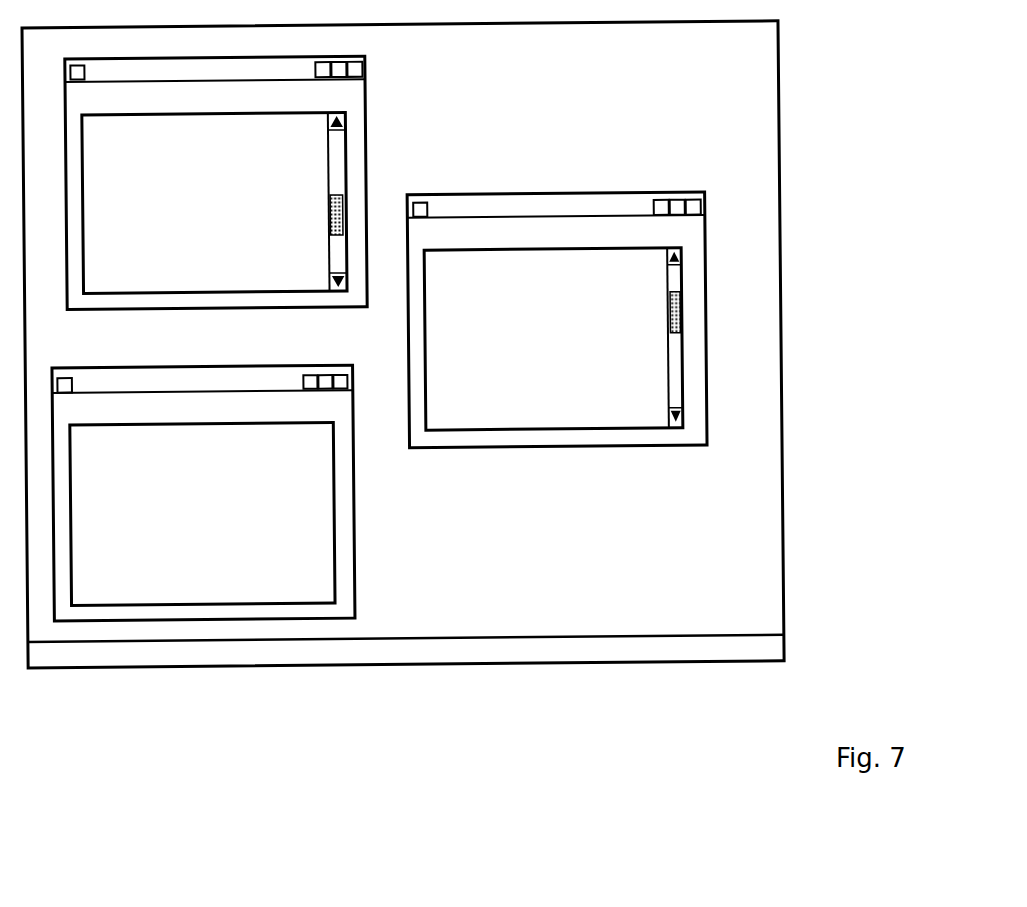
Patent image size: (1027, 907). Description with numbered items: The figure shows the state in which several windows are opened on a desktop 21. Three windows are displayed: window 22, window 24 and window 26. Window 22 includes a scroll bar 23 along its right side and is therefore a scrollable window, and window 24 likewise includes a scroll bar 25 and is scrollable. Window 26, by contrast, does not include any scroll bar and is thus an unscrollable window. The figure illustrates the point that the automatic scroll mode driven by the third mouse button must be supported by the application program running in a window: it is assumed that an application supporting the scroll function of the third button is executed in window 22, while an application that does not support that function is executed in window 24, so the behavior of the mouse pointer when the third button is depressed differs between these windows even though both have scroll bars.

The desktop 21 is at (403, 344).
The window 22 is at (216, 182).
The scroll bar 23 is at (344, 173).
The window 24 is at (557, 320).
The scroll bar 25 is at (679, 314).
The window 26 is at (203, 493).